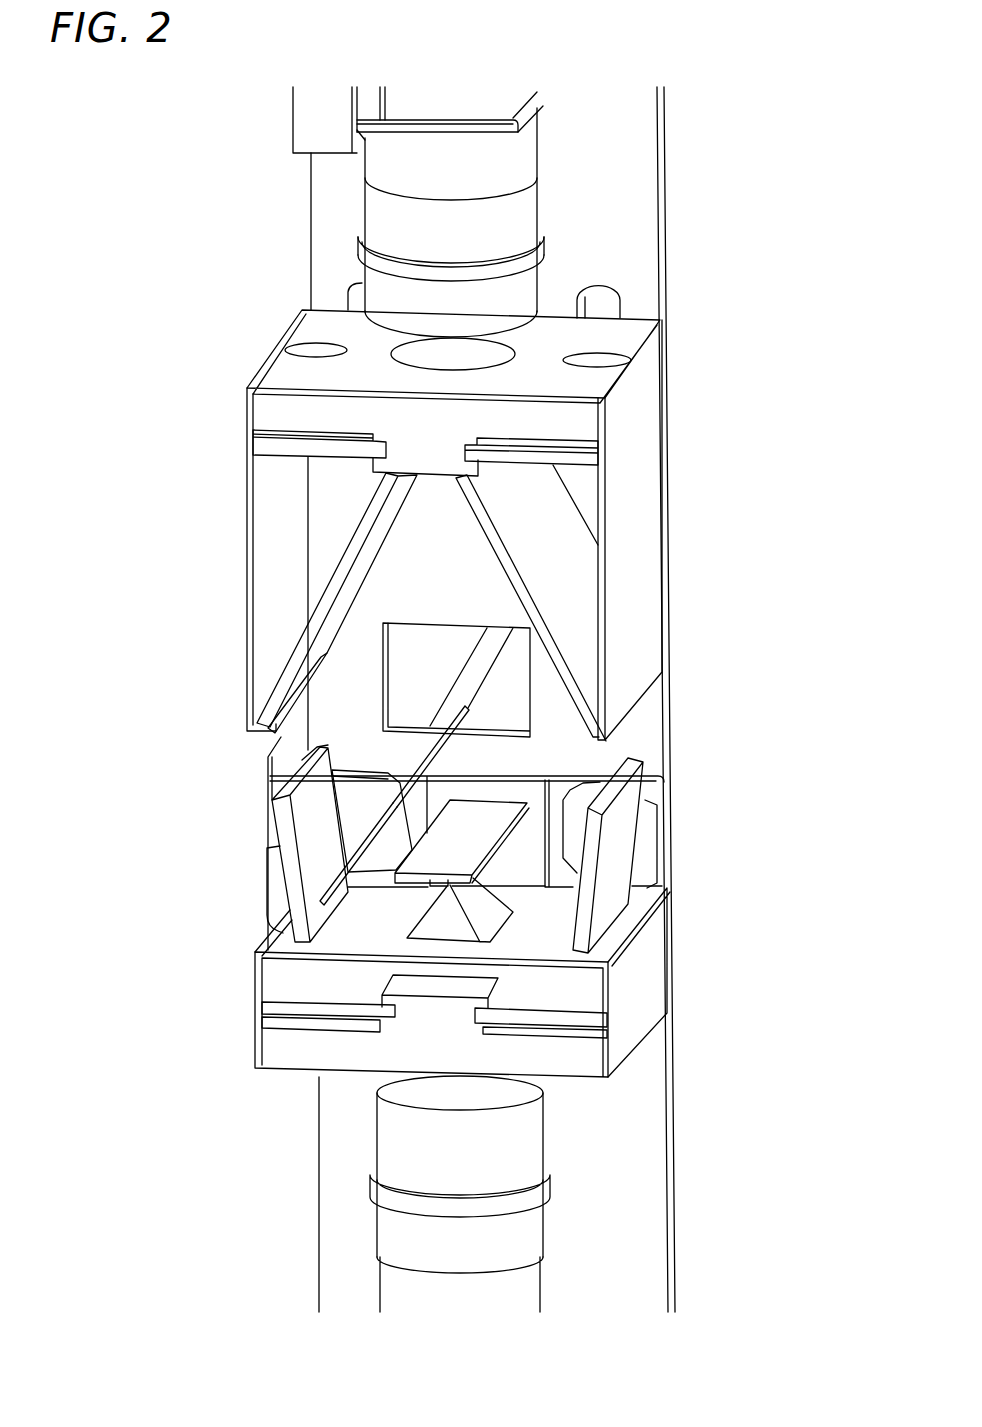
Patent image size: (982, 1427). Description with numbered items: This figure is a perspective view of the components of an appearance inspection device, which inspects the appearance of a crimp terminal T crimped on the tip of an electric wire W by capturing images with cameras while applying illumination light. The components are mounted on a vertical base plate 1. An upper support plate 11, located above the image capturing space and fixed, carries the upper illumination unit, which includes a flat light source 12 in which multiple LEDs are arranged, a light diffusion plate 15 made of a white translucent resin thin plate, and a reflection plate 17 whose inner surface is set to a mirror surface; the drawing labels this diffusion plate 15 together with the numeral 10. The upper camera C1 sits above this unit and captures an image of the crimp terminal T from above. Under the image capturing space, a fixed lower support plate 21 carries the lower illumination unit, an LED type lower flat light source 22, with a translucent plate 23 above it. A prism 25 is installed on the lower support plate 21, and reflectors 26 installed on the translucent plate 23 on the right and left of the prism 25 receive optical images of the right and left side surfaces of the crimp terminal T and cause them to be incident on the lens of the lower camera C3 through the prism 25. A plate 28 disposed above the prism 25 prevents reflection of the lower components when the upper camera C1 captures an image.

The vertical base plate 1 is at (665, 197).
The upper camera C1 is at (527, 143).
The upper support plate 11 is at (597, 335).
The flat light source 12 is at (277, 448).
The reflection plate 17 is at (248, 543).
The light diffusion plate 15 is at (327, 600).
The upper jig 10 is at (464, 603).
The crimp terminal T is at (467, 717).
The electric wire W is at (322, 880).
The lower support plate 21 is at (278, 1065).
The lower flat light source 22 is at (290, 993).
The translucent plate 23 is at (258, 955).
The prism 25 is at (482, 903).
The reflectors 26 is at (280, 815).
The plate 28 is at (480, 845).
The lower camera C3 is at (533, 1220).